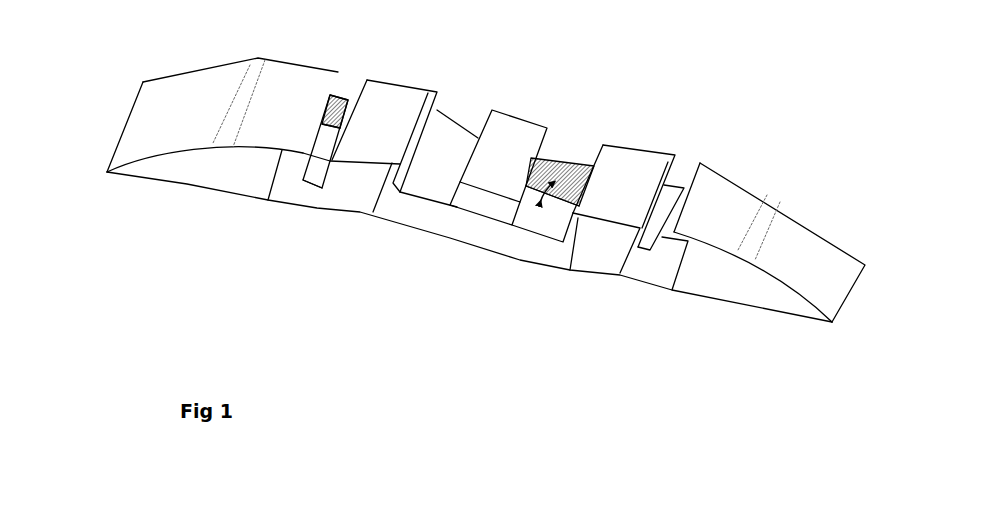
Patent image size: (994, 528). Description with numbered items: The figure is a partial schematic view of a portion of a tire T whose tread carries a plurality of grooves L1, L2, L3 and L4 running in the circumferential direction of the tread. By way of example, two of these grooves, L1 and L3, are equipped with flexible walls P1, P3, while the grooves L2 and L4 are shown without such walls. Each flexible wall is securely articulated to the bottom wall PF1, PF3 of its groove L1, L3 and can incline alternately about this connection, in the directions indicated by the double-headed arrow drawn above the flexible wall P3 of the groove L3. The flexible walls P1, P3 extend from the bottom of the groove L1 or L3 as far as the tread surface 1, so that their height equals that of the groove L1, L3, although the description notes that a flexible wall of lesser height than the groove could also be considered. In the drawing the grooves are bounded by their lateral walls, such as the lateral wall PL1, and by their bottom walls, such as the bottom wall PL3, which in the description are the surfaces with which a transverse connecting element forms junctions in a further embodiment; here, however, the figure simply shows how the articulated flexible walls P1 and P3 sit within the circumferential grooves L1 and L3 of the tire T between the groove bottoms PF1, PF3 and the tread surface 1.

The tread surface 1 is at (290, 116).
The lateral wall PL1 is at (317, 128).
The flexible wall P1 is at (343, 107).
The bottom wall PF1 is at (317, 158).
The groove L1 is at (305, 187).
The groove L2 is at (417, 168).
The bottom wall PL3 is at (512, 208).
The flexible wall P3 is at (570, 188).
The bottom wall PF3 is at (532, 208).
The groove L3 is at (542, 228).
The groove L4 is at (653, 233).
The tire T is at (743, 193).